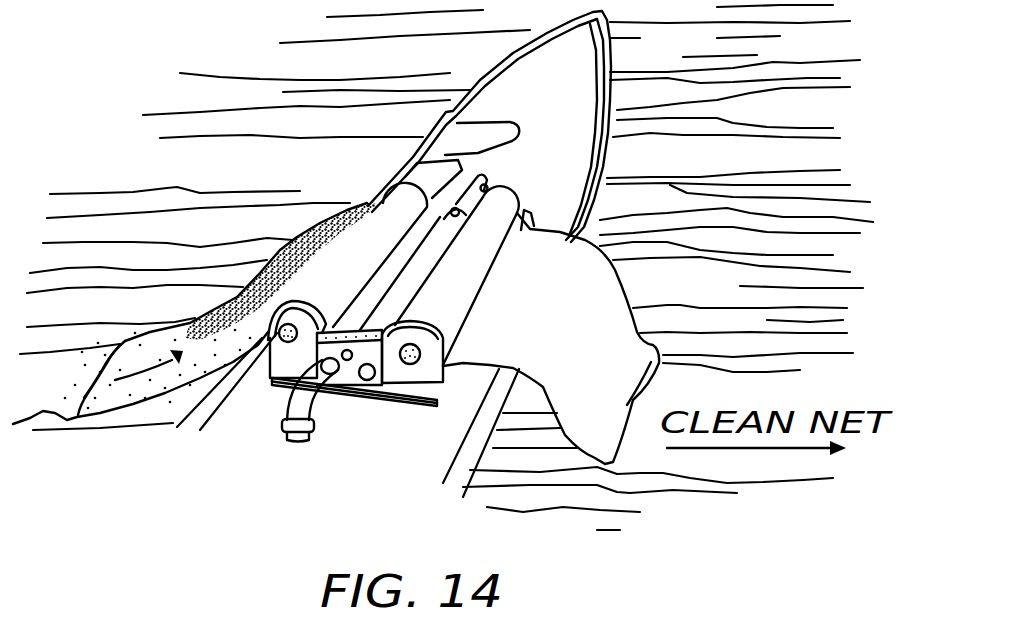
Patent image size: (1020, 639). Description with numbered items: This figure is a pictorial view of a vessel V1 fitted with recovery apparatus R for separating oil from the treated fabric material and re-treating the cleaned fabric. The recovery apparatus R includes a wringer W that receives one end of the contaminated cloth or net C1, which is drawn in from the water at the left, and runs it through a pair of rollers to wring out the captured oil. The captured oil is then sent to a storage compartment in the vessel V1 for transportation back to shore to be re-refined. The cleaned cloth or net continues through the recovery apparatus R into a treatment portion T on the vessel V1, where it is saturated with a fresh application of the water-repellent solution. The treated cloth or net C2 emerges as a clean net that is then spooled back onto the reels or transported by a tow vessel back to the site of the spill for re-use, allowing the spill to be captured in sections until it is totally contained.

The vessel V1 is at (565, 91).
The wringer W is at (378, 210).
The treatment portion T is at (554, 185).
The treated cloth or net C2 is at (600, 310).
The contaminated cloth or net C1 is at (63, 397).
The recovery apparatus R is at (353, 412).